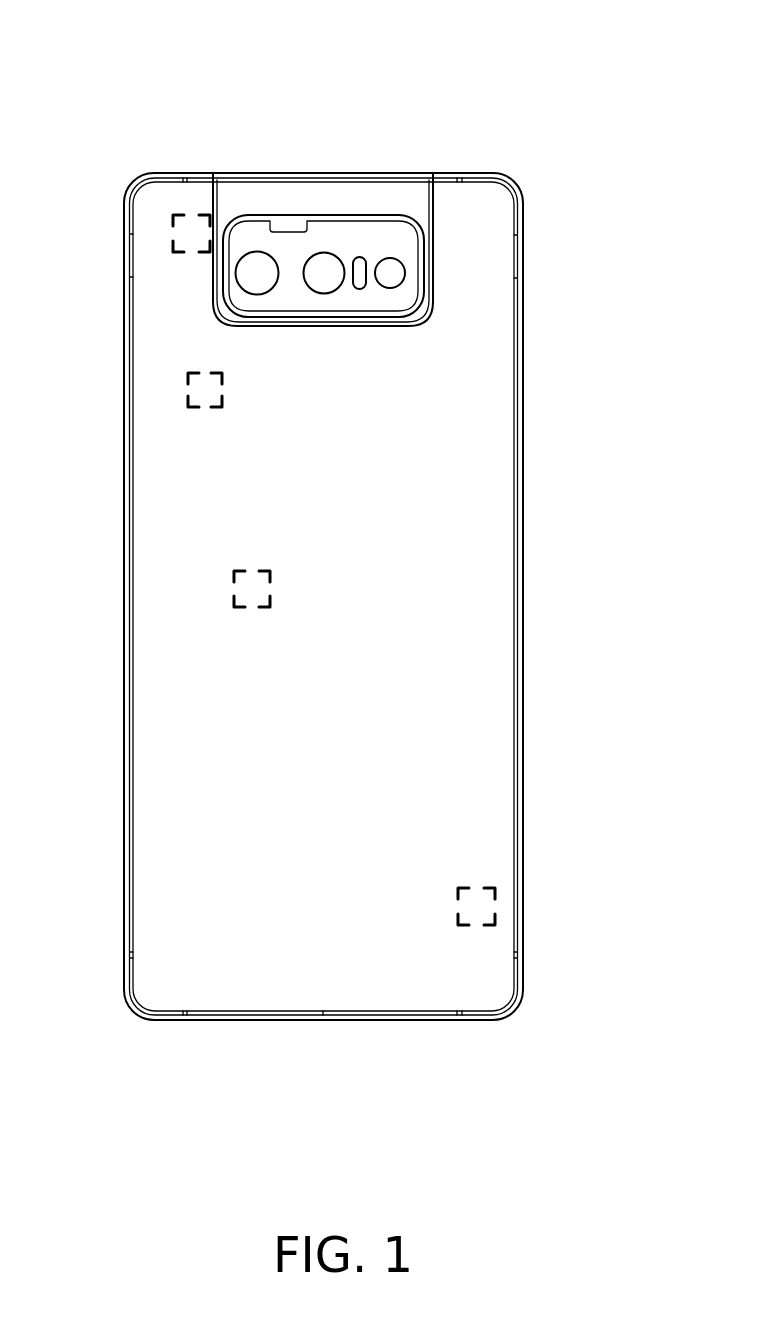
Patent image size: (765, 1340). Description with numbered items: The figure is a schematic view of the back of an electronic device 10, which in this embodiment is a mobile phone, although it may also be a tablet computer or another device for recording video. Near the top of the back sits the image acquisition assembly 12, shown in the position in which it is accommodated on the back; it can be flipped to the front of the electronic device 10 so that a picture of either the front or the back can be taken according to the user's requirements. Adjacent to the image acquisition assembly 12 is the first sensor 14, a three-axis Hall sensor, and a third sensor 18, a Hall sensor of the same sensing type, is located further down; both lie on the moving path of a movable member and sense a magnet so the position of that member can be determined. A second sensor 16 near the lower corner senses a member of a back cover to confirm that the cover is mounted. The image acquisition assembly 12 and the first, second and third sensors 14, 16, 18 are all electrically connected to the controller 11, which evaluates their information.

The electronic device 10 is at (97, 72).
The controller 11 is at (232, 580).
The image acquisition assembly 12 is at (391, 195).
The first sensor 14 is at (172, 240).
The second sensor 16 is at (482, 888).
The third sensor 18 is at (187, 398).